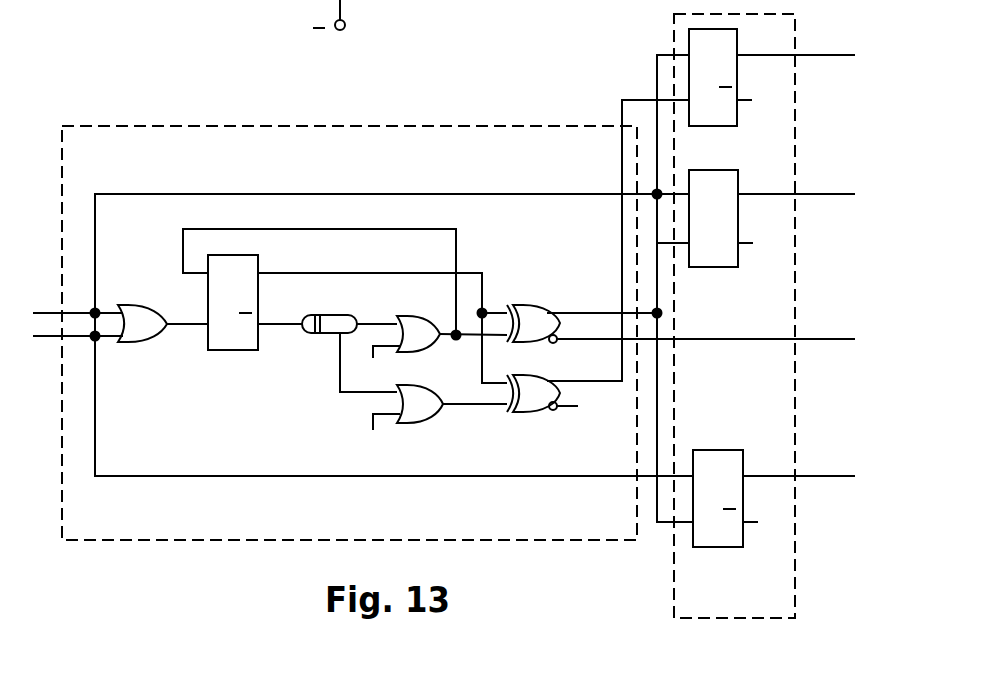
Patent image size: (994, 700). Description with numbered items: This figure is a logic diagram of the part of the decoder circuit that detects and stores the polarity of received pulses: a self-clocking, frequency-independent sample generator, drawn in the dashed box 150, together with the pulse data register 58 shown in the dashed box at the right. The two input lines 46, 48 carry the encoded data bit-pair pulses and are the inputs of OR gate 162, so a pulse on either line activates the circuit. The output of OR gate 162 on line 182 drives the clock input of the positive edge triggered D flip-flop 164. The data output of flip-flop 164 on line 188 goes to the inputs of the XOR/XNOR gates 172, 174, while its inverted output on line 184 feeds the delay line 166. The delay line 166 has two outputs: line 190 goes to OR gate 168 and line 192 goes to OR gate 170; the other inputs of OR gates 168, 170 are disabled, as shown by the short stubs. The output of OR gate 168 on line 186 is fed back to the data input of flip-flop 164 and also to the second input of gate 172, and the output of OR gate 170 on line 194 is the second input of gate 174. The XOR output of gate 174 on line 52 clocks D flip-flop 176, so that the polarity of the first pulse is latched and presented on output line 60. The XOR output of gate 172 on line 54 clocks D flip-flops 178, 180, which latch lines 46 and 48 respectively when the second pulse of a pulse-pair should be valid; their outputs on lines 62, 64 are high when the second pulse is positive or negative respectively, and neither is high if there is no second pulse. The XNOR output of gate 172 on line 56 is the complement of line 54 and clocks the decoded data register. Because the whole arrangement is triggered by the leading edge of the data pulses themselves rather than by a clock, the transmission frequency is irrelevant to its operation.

The line 46 is at (48, 310).
The line 48 is at (50, 340).
The line 52 is at (600, 382).
The line 54 is at (592, 311).
The line 56 is at (822, 340).
The pulse data register 58 is at (795, 42).
The line 60 is at (835, 58).
The line 62 is at (822, 196).
The line 64 is at (833, 477).
The logic circuit 150 is at (357, 125).
The OR gate 162 is at (147, 343).
The positive edge triggered D flip-flop 164 is at (240, 352).
The delay line 166 is at (328, 337).
The OR gate 168 is at (430, 349).
The OR gate 170 is at (430, 424).
The XOR/XNOR gate 172 is at (536, 272).
The XOR/XNOR gate 174 is at (538, 412).
The D flip-flop 176 is at (723, 127).
The D flip-flop 178 is at (738, 258).
The D flip-flop 180 is at (725, 548).
The line 182 is at (182, 316).
The line 184 is at (284, 324).
The line 186 is at (320, 228).
The line 188 is at (348, 273).
The line 190 is at (374, 322).
The line 192 is at (360, 393).
The line 194 is at (478, 406).